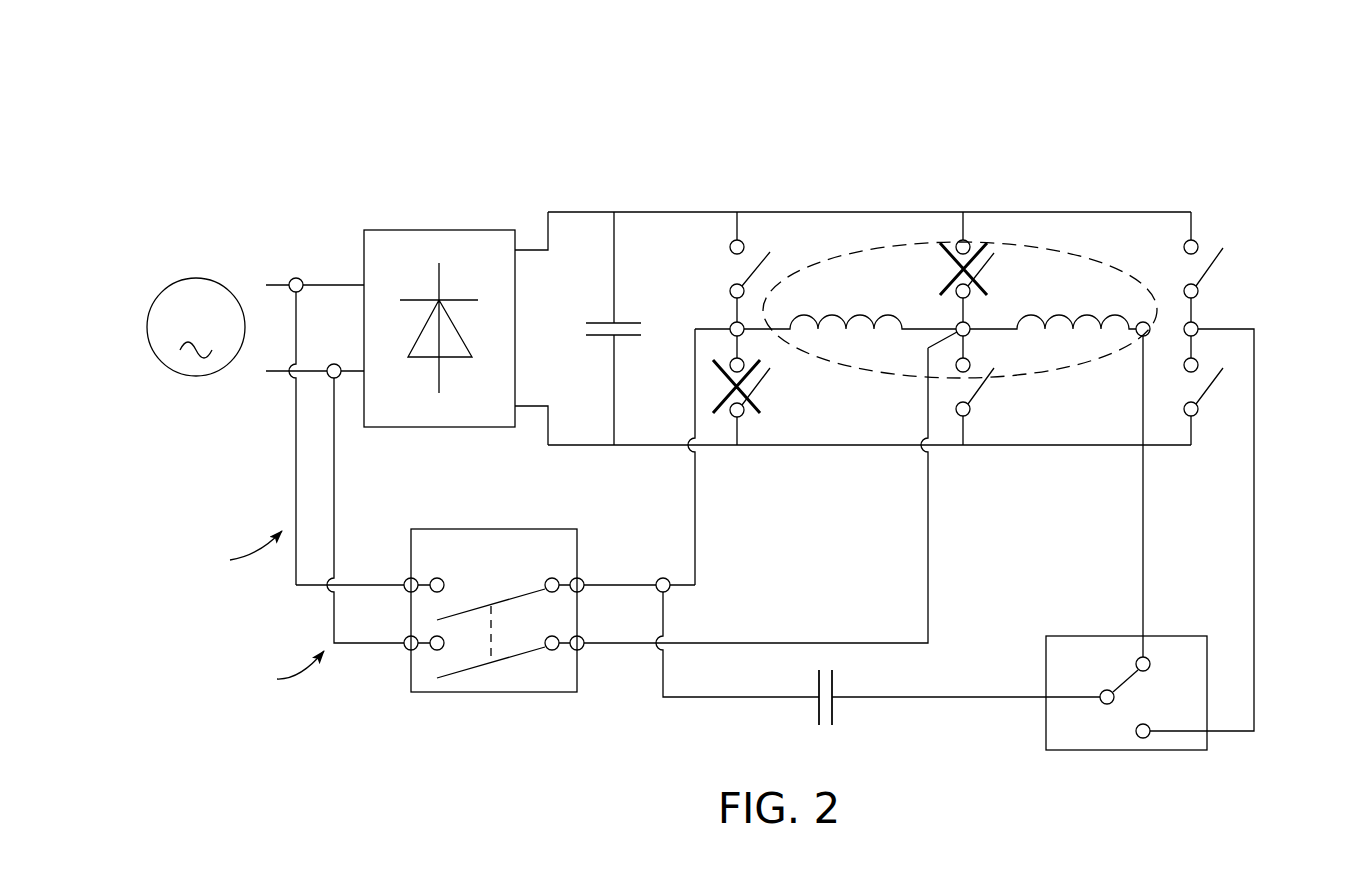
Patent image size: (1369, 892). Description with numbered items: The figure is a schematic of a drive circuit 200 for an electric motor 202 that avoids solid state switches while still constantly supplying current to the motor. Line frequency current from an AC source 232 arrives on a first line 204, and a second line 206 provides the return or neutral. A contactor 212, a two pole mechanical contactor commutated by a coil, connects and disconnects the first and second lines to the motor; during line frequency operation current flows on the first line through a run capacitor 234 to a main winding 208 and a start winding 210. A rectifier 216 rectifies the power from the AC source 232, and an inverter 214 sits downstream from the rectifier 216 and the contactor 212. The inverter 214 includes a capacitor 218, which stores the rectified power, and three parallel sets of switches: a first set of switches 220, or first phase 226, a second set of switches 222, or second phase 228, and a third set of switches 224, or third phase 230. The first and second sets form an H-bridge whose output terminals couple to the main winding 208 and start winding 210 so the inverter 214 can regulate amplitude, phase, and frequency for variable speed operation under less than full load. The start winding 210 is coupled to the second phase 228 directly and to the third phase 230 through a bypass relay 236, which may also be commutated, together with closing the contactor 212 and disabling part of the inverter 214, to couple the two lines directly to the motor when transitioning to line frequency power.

The drive circuit 200 is at (166, 136).
The electric motor 202 is at (915, 238).
The first line L1 204 is at (268, 284).
The second line L2 206 is at (275, 372).
The main winding 208 is at (836, 341).
The start winding 210 is at (1084, 341).
The contactor 212 is at (493, 529).
The inverter 214 is at (1262, 312).
The rectifier 216 is at (427, 229).
The capacitor 218 is at (625, 198).
The first set of switches 220 is at (730, 279).
The first phase 226 is at (746, 197).
The second set of switches 222 is at (1020, 386).
The second phase 228 is at (965, 474).
The third set of switches 224 is at (1272, 383).
The third phase 230 is at (1189, 474).
The AC source 232 is at (141, 274).
The run capacitor 234 is at (832, 717).
The relay 236 is at (1167, 750).